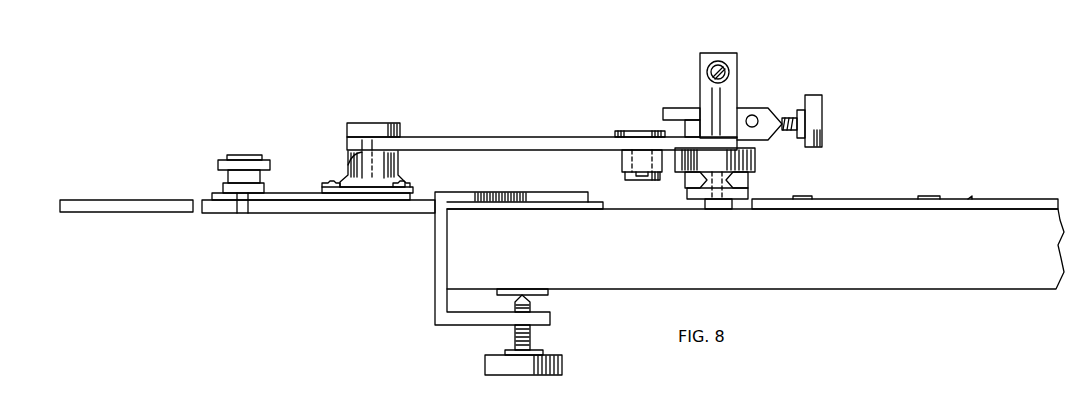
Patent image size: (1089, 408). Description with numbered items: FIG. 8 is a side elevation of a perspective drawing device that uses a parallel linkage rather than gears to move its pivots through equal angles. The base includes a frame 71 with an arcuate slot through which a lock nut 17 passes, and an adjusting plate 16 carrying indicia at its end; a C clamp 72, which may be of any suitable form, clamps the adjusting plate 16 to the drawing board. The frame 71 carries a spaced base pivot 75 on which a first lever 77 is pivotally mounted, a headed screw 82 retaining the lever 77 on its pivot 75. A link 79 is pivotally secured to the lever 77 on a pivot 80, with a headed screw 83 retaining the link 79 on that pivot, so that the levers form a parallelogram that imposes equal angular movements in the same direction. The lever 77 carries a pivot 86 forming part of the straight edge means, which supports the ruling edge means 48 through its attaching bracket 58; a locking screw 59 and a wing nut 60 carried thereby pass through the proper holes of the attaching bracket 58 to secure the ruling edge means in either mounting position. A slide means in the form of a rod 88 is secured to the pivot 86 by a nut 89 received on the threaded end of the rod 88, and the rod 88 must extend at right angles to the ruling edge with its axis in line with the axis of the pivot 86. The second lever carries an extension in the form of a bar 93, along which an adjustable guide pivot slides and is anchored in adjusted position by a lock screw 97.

The adjusting plate 16 is at (303, 208).
The lock nut 17 is at (218, 165).
The ruling edge means 48 is at (1018, 206).
The attaching bracket 58 is at (852, 199).
The locking screw 59 is at (717, 209).
The wing nut 60 is at (750, 177).
The frame 71 is at (283, 197).
The C clamp 72 is at (435, 245).
The base pivot 75 is at (358, 146).
The first lever 77 is at (493, 147).
The link 79 is at (622, 160).
The pivot 80 is at (640, 131).
The headed screw 82 is at (368, 130).
The headed screw 83 is at (628, 182).
The pivot 86 is at (713, 87).
The rod 88 is at (709, 57).
The nut 89 is at (720, 62).
The bar 93 is at (752, 108).
The lock screw 97 is at (815, 107).